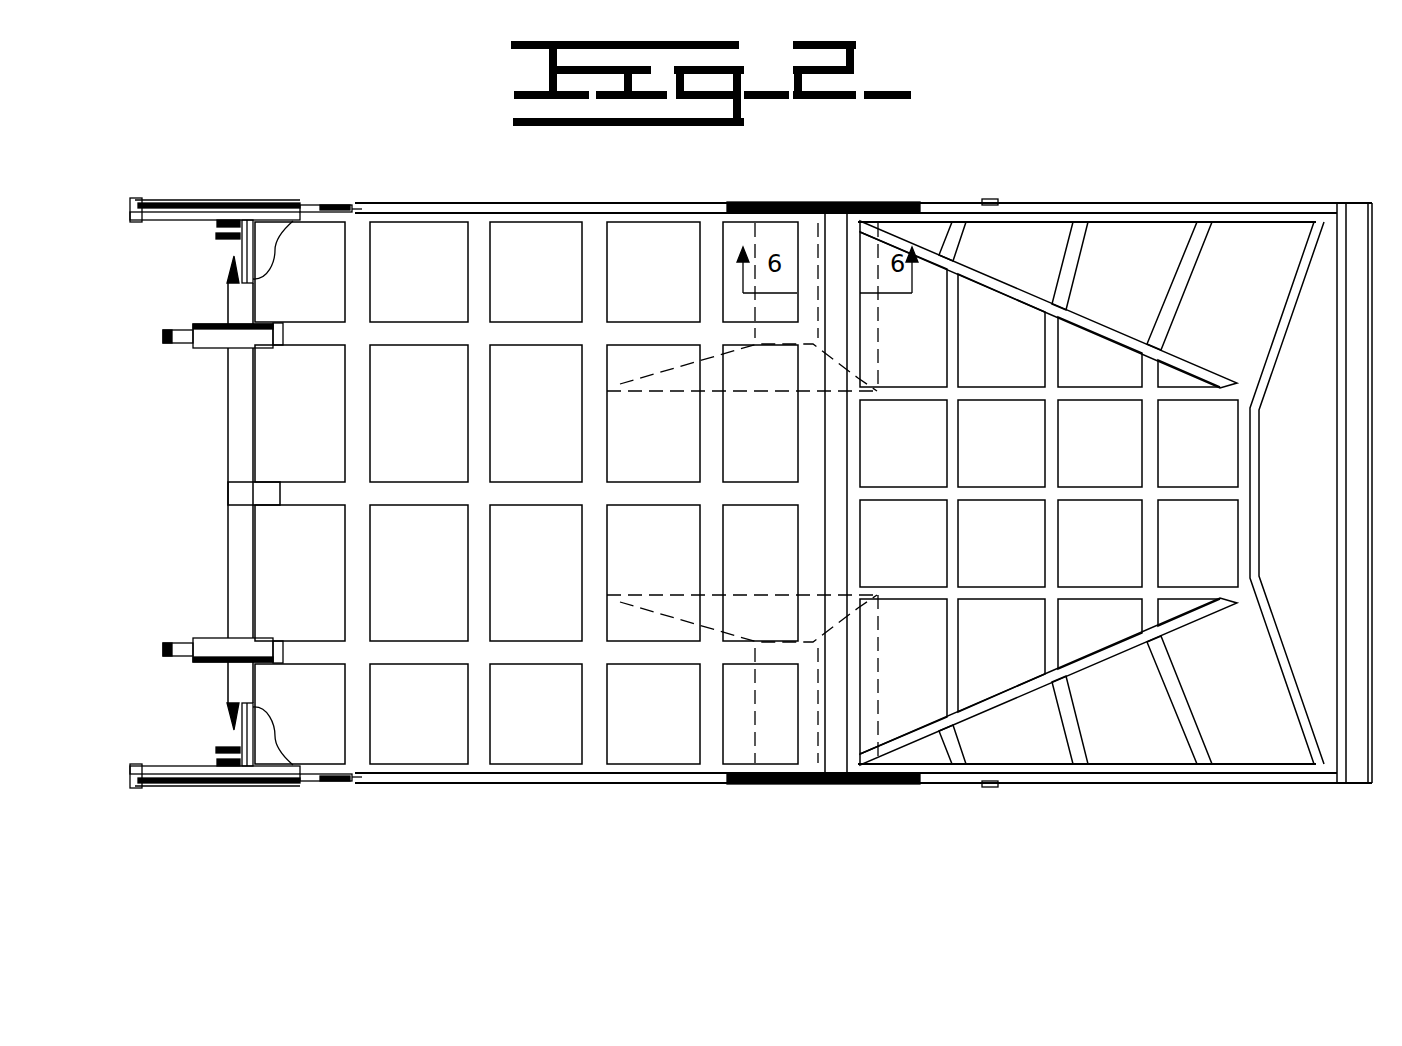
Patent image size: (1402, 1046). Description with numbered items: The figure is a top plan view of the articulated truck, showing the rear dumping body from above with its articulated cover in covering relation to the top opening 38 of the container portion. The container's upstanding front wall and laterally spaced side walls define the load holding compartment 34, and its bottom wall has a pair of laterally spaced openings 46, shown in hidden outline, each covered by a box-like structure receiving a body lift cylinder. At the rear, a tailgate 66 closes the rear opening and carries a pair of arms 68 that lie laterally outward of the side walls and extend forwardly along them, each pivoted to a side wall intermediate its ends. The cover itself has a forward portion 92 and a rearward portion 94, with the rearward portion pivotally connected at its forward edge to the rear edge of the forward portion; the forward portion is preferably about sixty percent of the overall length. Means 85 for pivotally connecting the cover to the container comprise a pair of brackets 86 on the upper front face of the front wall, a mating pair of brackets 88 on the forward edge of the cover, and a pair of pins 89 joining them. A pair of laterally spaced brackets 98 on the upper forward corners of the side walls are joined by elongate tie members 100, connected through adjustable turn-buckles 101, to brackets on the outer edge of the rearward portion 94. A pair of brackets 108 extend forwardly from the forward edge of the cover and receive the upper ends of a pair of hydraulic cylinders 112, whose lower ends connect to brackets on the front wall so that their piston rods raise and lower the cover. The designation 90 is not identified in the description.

The load holding compartment 34 is at (425, 262).
The top opening 38 is at (430, 723).
The laterally spaced openings 46 is at (636, 393).
The tailgate 66 is at (1358, 745).
The arms 68 is at (1122, 203).
The means for pivotally connecting 85 is at (233, 272).
The bracket 86 is at (270, 240).
The bracket 88 is at (217, 224).
The pins 89 is at (226, 238).
The longitudinal beam 90 is at (845, 203).
The forward portion 92 is at (440, 447).
The rearward portion 94 is at (1125, 457).
The bracket 98 is at (152, 198).
The tie member 100 is at (640, 205).
The adjustable turn-buckles 101 is at (263, 203).
The brackets 108 is at (254, 350).
The hydraulic cylinders 112 is at (165, 337).